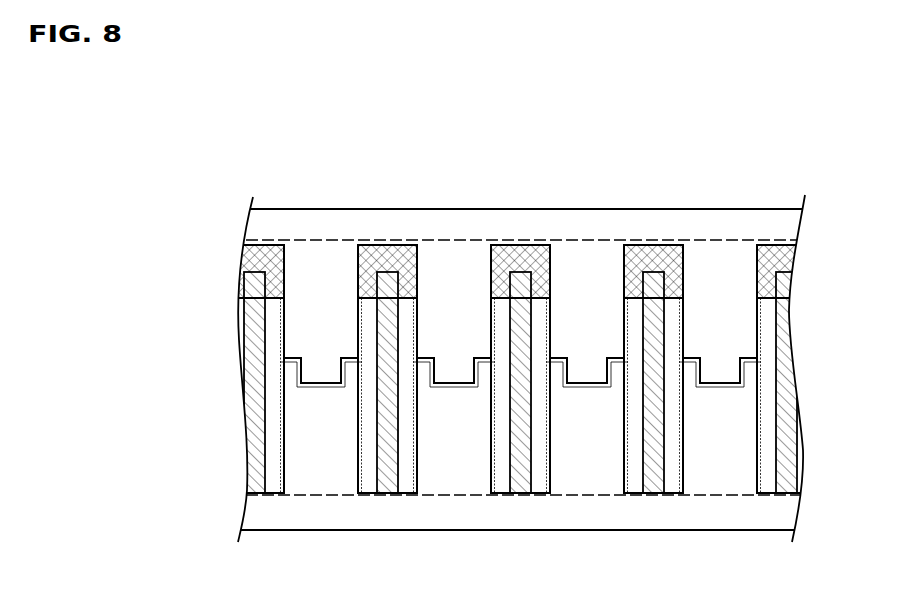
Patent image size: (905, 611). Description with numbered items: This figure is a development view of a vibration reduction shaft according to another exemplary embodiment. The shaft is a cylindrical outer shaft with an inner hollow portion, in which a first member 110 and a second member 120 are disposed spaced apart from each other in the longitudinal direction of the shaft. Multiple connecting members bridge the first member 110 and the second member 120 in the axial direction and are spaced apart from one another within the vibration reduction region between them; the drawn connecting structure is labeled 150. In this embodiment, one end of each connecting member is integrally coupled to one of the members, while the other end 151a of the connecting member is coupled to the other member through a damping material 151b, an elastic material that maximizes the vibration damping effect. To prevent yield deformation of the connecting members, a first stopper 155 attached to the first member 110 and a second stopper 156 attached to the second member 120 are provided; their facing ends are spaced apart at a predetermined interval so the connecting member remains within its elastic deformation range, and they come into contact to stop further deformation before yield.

The first member 110 is at (258, 224).
The second member 120 is at (258, 517).
The gate structure 150 is at (258, 340).
The other end of the connecting member 151a is at (653, 287).
The damping material 151b is at (640, 254).
The first stopper 155 is at (742, 323).
The second stopper 156 is at (742, 437).